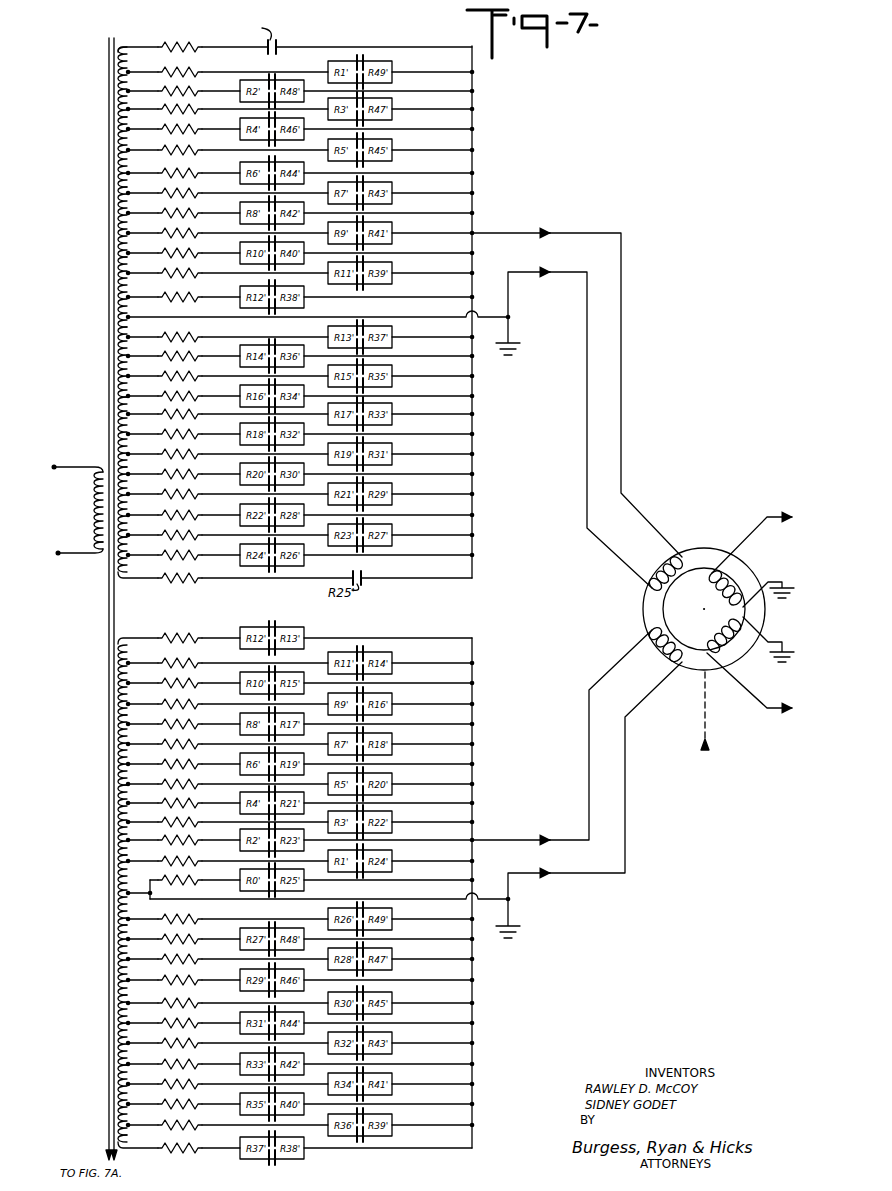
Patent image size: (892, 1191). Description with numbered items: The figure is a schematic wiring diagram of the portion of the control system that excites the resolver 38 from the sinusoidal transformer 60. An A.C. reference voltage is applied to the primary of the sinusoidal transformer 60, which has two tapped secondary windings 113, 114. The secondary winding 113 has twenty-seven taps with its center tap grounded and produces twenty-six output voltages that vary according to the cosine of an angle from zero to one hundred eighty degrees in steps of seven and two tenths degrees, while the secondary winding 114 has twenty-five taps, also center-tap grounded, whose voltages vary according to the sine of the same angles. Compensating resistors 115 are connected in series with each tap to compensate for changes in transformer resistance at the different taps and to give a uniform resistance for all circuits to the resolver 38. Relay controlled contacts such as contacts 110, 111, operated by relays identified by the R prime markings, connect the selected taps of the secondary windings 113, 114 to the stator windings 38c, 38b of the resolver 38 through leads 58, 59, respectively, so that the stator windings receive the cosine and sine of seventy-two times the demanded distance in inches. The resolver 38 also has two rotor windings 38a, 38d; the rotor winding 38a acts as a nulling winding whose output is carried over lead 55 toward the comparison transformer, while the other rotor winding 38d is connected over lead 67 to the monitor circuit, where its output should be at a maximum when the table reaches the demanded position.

The secondary winding 113 is at (118, 122).
The secondary winding 114 is at (118, 722).
The compensating resistors 115 is at (203, 42).
The sinusoidal transformer 60 is at (99, 557).
The relay controlled contact 110 is at (361, 549).
The relay controlled contact 111 is at (276, 928).
The lead 58 is at (621, 368).
The lead 59 is at (589, 728).
The resolver 38 is at (708, 546).
The lead 67 is at (748, 536).
The rotor winding 38a is at (731, 657).
The stator winding 38b is at (667, 656).
The stator winding 38c is at (655, 566).
The rotor winding 38d is at (731, 577).
The lead 55 is at (764, 709).